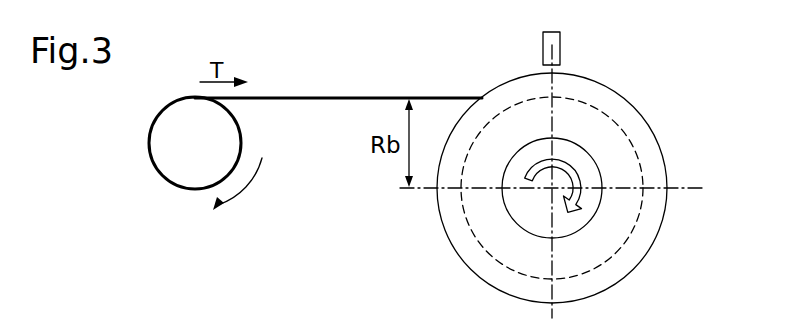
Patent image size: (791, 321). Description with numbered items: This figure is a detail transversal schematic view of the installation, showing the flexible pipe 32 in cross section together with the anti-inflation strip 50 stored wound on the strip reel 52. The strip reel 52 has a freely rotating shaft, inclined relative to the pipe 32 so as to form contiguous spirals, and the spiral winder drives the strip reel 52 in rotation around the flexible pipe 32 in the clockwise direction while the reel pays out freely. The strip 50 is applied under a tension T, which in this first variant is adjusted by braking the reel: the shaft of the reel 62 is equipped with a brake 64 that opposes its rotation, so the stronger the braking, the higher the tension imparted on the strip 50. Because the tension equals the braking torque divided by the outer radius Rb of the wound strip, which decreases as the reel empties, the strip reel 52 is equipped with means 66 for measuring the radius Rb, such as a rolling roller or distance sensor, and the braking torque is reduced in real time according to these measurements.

The flexible pipe 32 is at (173, 125).
The anti-inflation strip 50 is at (358, 97).
The strip reel 52 is at (607, 101).
The shaft of the reel 62 is at (547, 190).
The brake 64 is at (585, 173).
The means for measuring the radius Rb 66 is at (562, 47).